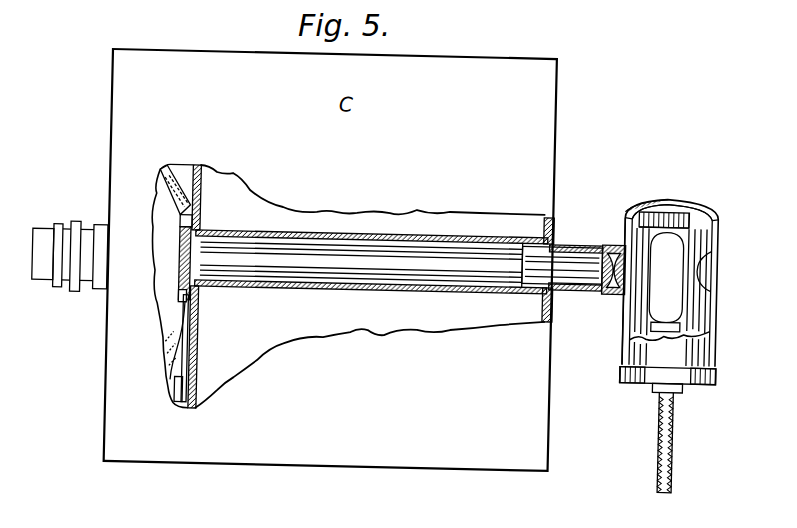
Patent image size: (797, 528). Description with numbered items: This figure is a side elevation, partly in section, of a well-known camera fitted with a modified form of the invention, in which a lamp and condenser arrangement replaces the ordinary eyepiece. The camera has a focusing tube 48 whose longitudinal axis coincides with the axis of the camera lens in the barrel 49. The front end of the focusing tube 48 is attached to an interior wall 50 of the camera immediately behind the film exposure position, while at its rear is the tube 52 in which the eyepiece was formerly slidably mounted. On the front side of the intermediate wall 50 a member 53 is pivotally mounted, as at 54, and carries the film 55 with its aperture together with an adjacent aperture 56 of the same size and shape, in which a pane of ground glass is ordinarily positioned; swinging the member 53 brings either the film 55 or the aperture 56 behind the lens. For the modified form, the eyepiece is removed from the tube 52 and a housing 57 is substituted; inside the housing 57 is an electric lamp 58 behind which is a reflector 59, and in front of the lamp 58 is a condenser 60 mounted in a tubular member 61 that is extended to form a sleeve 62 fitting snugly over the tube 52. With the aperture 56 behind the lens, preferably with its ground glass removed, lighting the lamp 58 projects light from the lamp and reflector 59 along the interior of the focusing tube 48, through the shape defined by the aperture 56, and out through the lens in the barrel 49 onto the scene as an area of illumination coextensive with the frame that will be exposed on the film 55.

The focusing tube 48 is at (412, 229).
The barrel 49 is at (69, 230).
The interior wall 50 is at (205, 198).
The tube 52 is at (579, 276).
The member 53 is at (200, 346).
The pivot 54 is at (196, 388).
The film 55 is at (157, 185).
The aperture 56 is at (182, 254).
The housing 57 is at (723, 280).
The electric lamp 58 is at (682, 222).
The reflector 59 is at (714, 250).
The condenser 60 is at (619, 283).
The tubular member 61 is at (617, 238).
The sleeve 62 is at (572, 235).